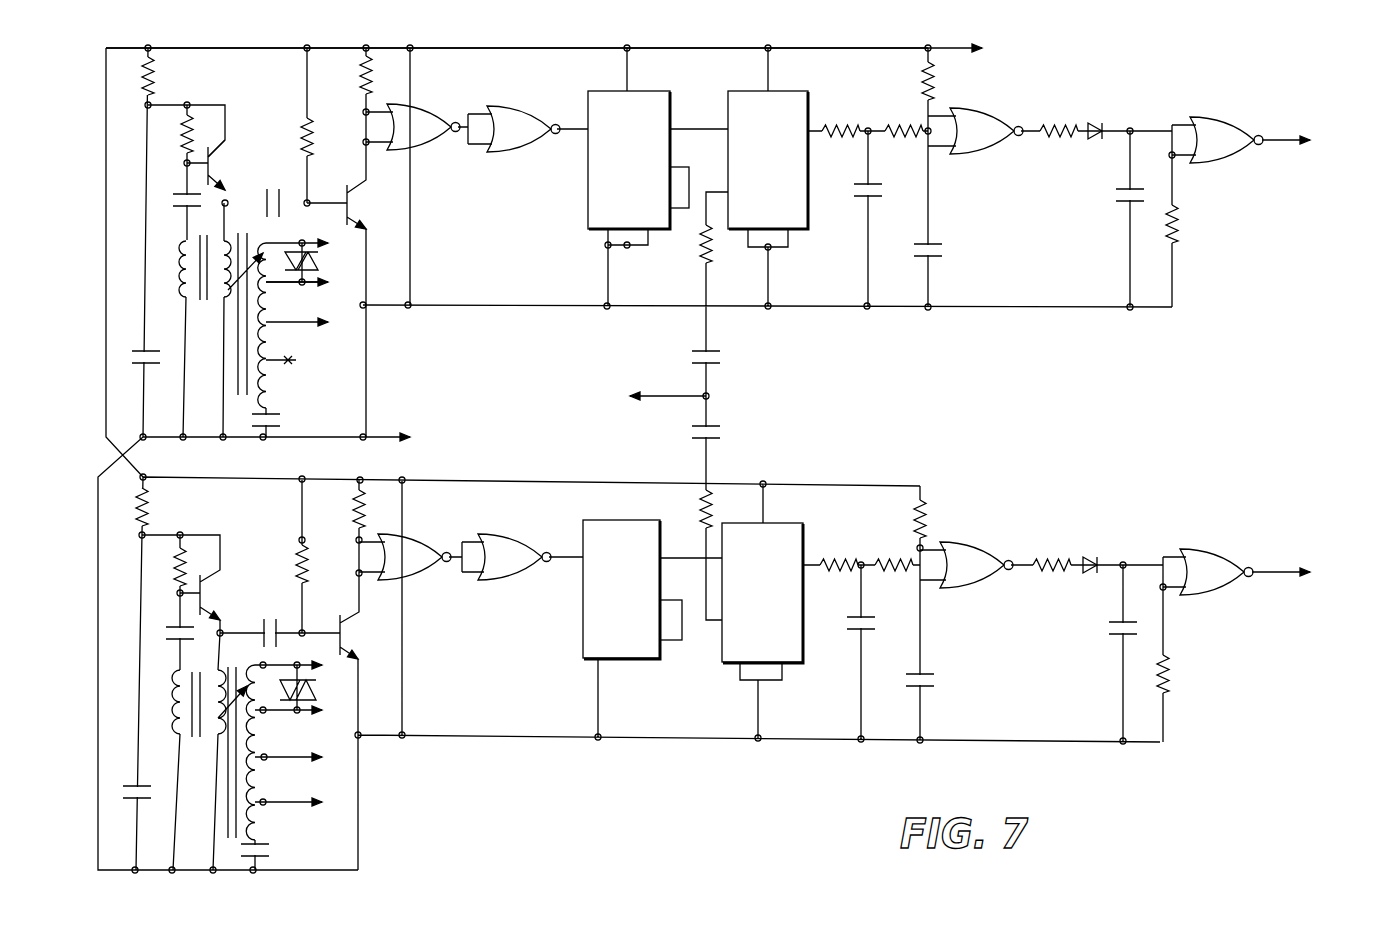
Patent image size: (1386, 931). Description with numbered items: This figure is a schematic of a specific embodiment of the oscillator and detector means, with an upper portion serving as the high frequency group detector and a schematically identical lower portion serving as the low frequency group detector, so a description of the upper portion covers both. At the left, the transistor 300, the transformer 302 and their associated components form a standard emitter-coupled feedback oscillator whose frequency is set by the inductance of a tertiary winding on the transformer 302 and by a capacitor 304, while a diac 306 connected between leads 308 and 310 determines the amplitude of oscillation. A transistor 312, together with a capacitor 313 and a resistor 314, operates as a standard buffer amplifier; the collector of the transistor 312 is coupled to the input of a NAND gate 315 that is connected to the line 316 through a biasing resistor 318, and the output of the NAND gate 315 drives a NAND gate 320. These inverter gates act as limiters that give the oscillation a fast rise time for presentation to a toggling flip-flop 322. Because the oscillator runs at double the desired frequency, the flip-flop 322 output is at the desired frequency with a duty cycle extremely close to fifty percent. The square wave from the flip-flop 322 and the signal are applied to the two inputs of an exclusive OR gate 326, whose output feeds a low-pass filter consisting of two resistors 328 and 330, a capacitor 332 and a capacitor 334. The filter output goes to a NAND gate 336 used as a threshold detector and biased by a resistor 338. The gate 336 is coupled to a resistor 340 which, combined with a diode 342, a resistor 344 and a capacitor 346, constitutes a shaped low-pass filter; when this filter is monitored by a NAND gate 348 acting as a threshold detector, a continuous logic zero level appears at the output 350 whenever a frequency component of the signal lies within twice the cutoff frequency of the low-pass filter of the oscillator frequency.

The transistor 300 is at (210, 150).
The transformer 302 is at (287, 360).
The capacitor 304 is at (270, 420).
The diac 306 is at (364, 262).
The lead 308 is at (335, 235).
The lead 310 is at (333, 286).
The transistor 312 is at (364, 197).
The capacitor 313 is at (282, 170).
The resistor 314 is at (322, 145).
The NAND gate 315 is at (440, 96).
The line 316 is at (468, 48).
The biasing resistor 318 is at (366, 78).
The NAND gate 320 is at (518, 103).
The toggling flip-flop 322 is at (652, 92).
The exclusive OR gate 326 is at (828, 80).
The resistor 328 is at (853, 116).
The resistor 330 is at (900, 127).
The capacitor 332 is at (862, 203).
The capacitor 334 is at (932, 248).
The NAND gate 336 is at (1000, 120).
The resistor 338 is at (937, 83).
The resistor 340 is at (1053, 128).
The diode 342 is at (1093, 142).
The resistor 344 is at (1180, 232).
The capacitor 346 is at (1122, 198).
The NAND gate 348 is at (1230, 120).
The output 350 is at (1288, 137).